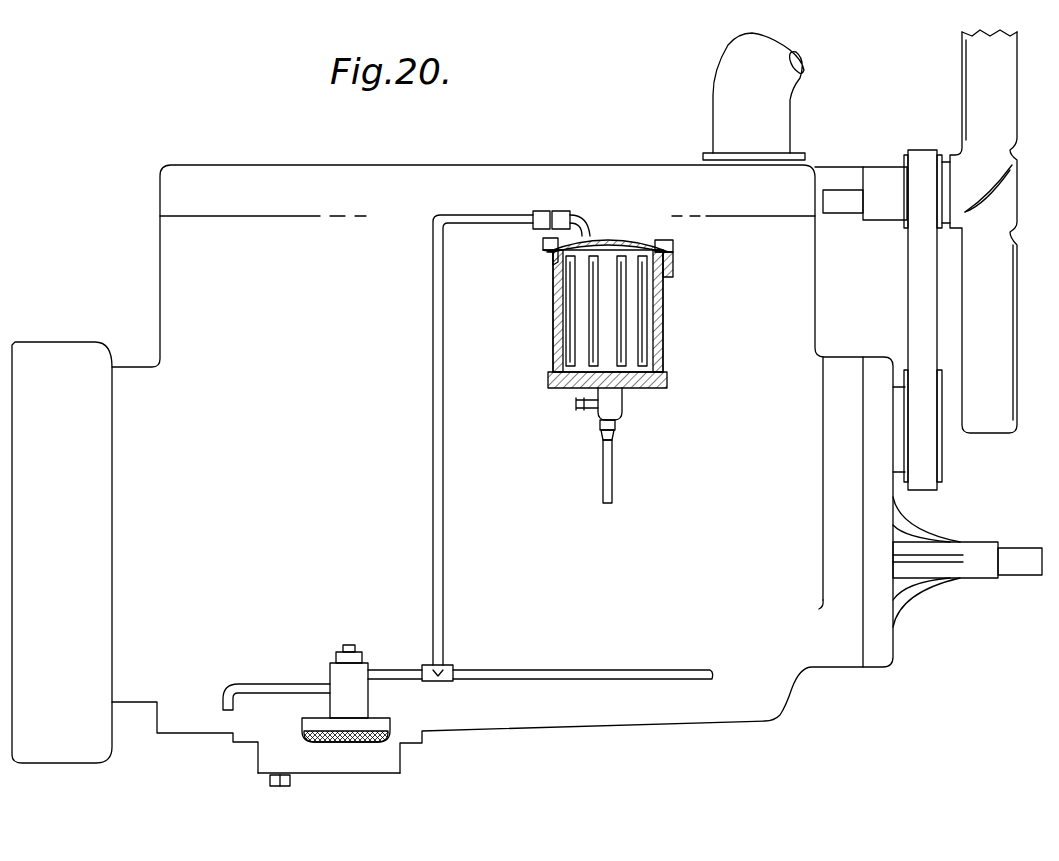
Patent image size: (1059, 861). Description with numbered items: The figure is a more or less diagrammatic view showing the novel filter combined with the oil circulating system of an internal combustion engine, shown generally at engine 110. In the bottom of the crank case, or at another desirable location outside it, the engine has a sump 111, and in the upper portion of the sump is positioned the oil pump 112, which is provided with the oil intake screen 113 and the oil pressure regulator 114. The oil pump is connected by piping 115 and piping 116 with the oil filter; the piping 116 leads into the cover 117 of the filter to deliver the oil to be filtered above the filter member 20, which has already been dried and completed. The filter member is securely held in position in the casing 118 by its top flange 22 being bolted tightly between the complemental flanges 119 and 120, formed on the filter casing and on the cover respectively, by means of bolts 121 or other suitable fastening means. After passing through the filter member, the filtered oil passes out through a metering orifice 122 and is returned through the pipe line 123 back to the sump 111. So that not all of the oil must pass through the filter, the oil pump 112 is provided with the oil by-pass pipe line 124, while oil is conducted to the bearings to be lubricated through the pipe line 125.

The engine 110 is at (527, 401).
The sump 111 is at (266, 757).
The oil pump 112 is at (352, 700).
The oil intake screen 113 is at (352, 740).
The oil pressure regulator 114 is at (342, 650).
The piping 115 is at (395, 670).
The piping 116 is at (444, 460).
The cover 117 is at (621, 238).
The casing 118 is at (556, 326).
The flange 119 is at (548, 262).
The filter member 20 is at (575, 308).
The top flange 22 is at (543, 257).
The flange 120 is at (545, 250).
The bolts 121 is at (672, 252).
The metering orifice 122 is at (612, 382).
The pipe line 123 is at (613, 466).
The oil by-pass pipe line 124 is at (237, 683).
The pipe line 125 is at (586, 670).